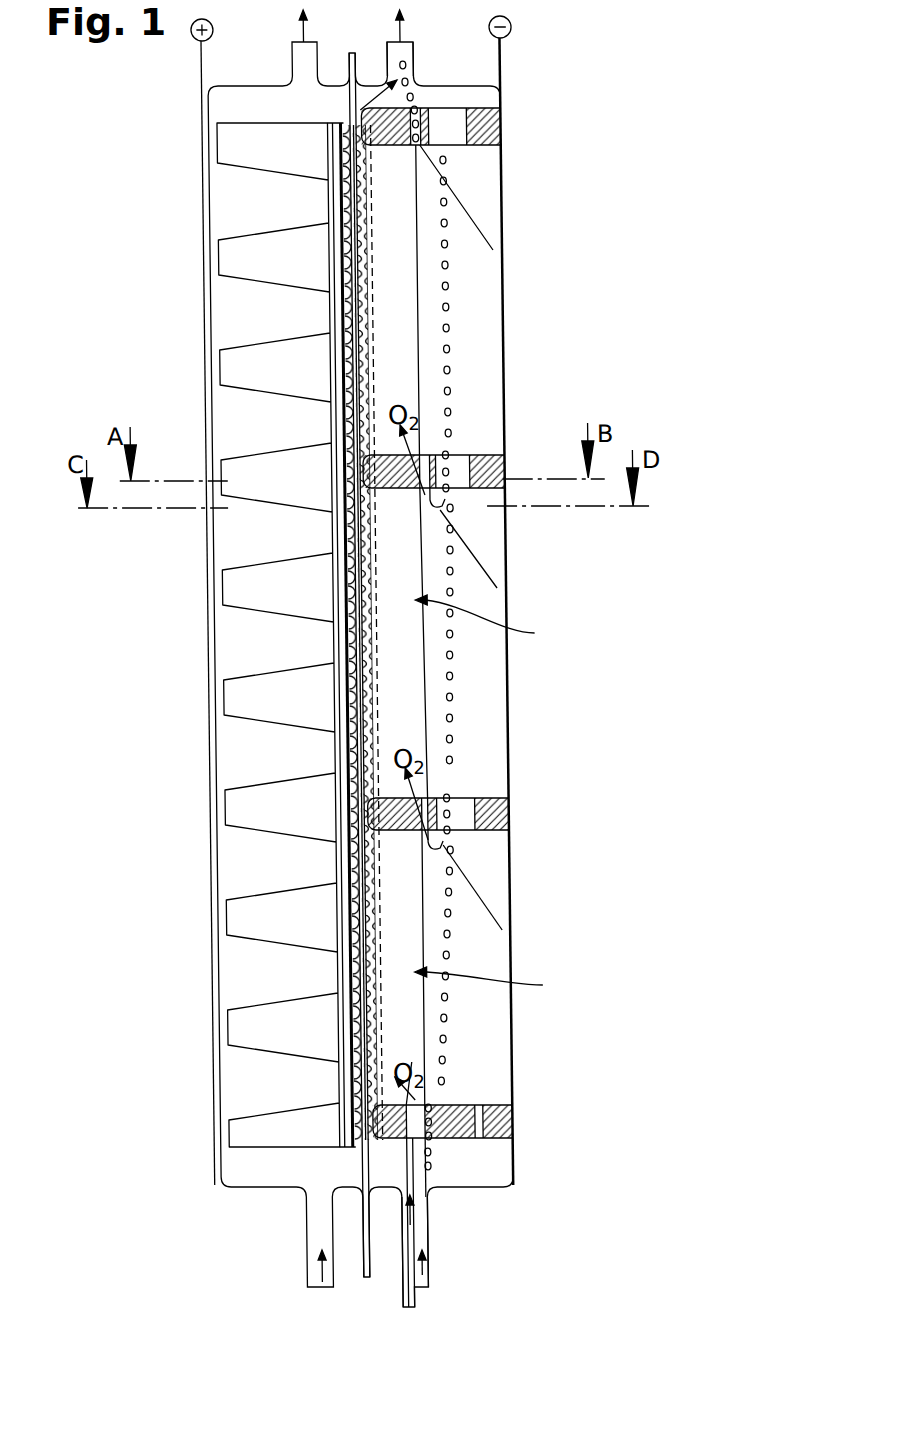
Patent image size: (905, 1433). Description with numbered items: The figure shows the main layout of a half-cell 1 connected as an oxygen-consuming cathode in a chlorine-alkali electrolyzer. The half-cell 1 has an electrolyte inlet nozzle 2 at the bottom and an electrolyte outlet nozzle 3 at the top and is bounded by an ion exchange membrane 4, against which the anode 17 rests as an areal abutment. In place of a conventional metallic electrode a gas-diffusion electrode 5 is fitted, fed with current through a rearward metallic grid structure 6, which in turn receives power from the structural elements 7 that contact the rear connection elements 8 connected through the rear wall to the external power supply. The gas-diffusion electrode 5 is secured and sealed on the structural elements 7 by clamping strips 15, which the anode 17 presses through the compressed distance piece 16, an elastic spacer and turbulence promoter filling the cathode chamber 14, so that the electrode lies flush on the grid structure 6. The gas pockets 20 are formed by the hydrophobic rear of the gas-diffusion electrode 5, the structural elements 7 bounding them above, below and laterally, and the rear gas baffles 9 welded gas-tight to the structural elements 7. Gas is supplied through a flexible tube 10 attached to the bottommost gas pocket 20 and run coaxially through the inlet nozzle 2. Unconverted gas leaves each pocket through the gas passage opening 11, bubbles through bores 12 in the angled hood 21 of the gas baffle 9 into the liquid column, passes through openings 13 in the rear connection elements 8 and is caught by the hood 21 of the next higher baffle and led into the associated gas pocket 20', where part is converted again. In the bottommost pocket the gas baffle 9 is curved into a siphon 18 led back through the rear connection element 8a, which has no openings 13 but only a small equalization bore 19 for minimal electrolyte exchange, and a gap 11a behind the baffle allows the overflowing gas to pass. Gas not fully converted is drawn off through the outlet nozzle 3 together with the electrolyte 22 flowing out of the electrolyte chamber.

The half-cell 1 is at (500, 940).
The electrolyte inlet nozzle 2 is at (414, 1227).
The electrolyte outlet nozzle 3 is at (411, 62).
The ion exchange membrane 4 is at (348, 985).
The gas-diffusion electrode 5 is at (363, 595).
The metallic grid structure 6 is at (372, 632).
The structural elements 7 is at (356, 467).
The rear connection elements 8 is at (502, 460).
The rear connection element 8a is at (490, 1122).
The gas baffles 9 is at (420, 703).
The flexible tube 10 is at (405, 1273).
The gas passage opening 11 is at (430, 797).
The gap 11a is at (415, 1103).
The bores 12 is at (438, 845).
The openings 13 is at (455, 812).
The cathode chamber 14 is at (351, 757).
The clamping strips 15 is at (365, 814).
The distance piece 16 is at (359, 880).
The anode 17 is at (357, 930).
The siphon 18 is at (413, 1173).
The equalization bore 19 is at (458, 1110).
The gas pocket 20 is at (496, 984).
The gas pocket 20' is at (495, 622).
The gas hood 21 is at (466, 890).
The electrolyte 22 is at (483, 1007).